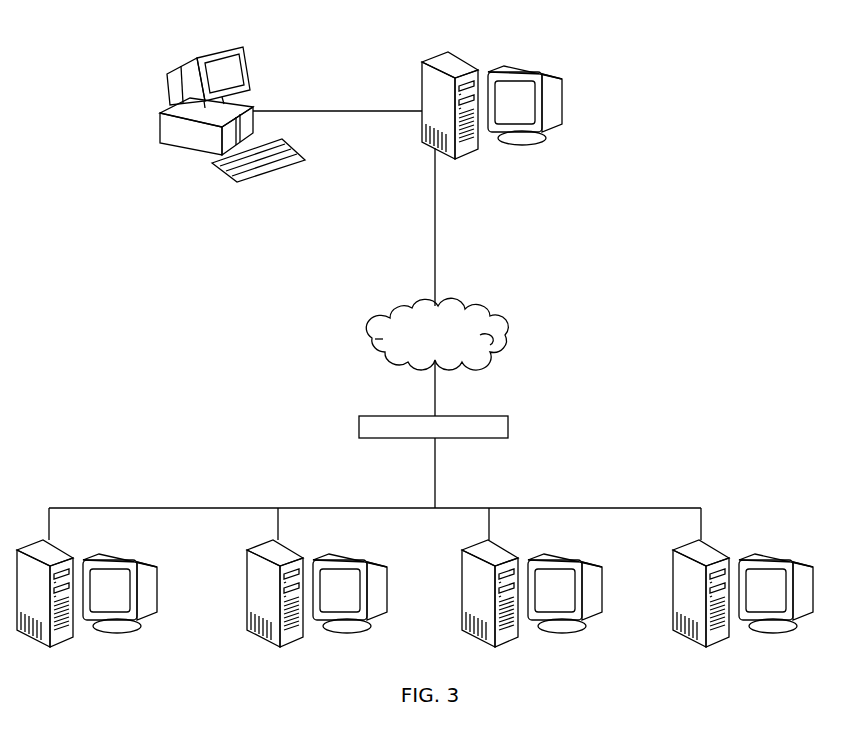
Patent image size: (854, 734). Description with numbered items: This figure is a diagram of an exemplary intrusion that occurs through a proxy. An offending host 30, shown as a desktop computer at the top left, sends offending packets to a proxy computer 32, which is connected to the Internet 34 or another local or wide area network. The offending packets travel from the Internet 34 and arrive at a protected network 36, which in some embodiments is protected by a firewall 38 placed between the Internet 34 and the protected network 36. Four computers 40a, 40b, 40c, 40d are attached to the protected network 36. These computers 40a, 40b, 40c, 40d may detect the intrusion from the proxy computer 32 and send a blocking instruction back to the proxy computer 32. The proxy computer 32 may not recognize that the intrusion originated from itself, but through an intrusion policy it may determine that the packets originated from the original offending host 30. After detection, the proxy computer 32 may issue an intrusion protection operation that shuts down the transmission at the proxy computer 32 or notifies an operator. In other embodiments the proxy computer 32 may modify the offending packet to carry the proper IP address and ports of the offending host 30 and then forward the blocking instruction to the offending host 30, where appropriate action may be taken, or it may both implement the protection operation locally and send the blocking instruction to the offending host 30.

The offending host 30 is at (168, 88).
The proxy computer 32 is at (472, 65).
The Internet 34 is at (500, 312).
The protected network 36 is at (210, 508).
The firewall 38 is at (508, 425).
The computer 40a is at (57, 645).
The computer 40b is at (287, 645).
The computer 40c is at (502, 645).
The computer 40d is at (713, 645).